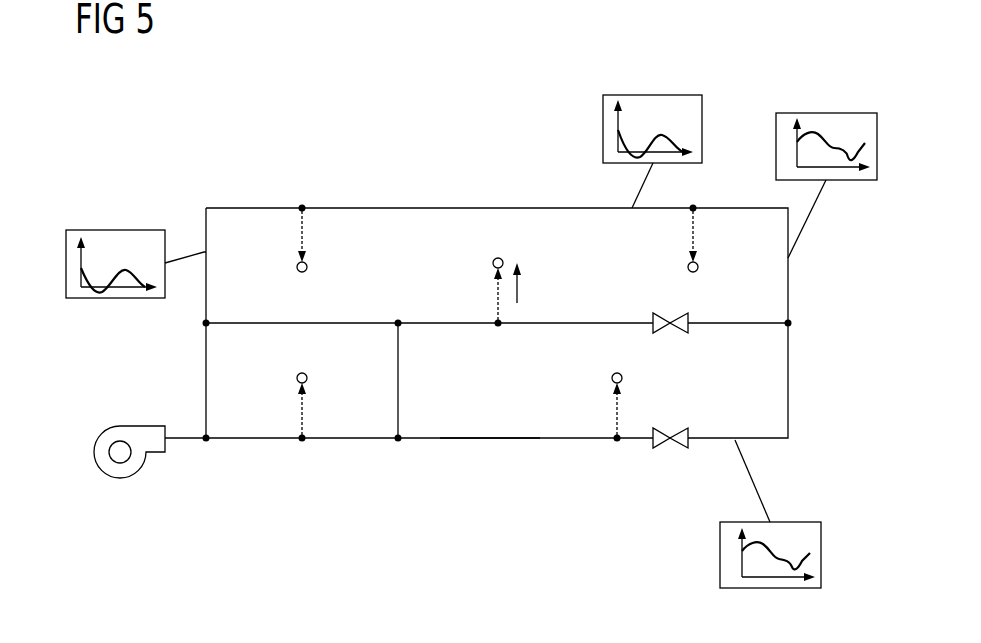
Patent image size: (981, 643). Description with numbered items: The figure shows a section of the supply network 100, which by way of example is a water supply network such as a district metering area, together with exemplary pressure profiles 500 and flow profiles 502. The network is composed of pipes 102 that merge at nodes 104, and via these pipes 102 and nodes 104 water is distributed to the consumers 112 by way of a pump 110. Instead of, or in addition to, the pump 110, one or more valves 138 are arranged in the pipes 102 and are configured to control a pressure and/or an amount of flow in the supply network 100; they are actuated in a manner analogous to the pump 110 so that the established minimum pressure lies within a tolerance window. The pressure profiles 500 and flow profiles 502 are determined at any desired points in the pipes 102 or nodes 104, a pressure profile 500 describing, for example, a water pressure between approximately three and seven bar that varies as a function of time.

The supply network 100 is at (245, 520).
The pipes 102 is at (485, 442).
The nodes 104 is at (398, 442).
The pump 110 is at (116, 478).
The consumers 112 is at (307, 268).
The valves 138 is at (687, 332).
The pressure profiles 500 is at (813, 102).
The flow profiles 502 is at (127, 212).